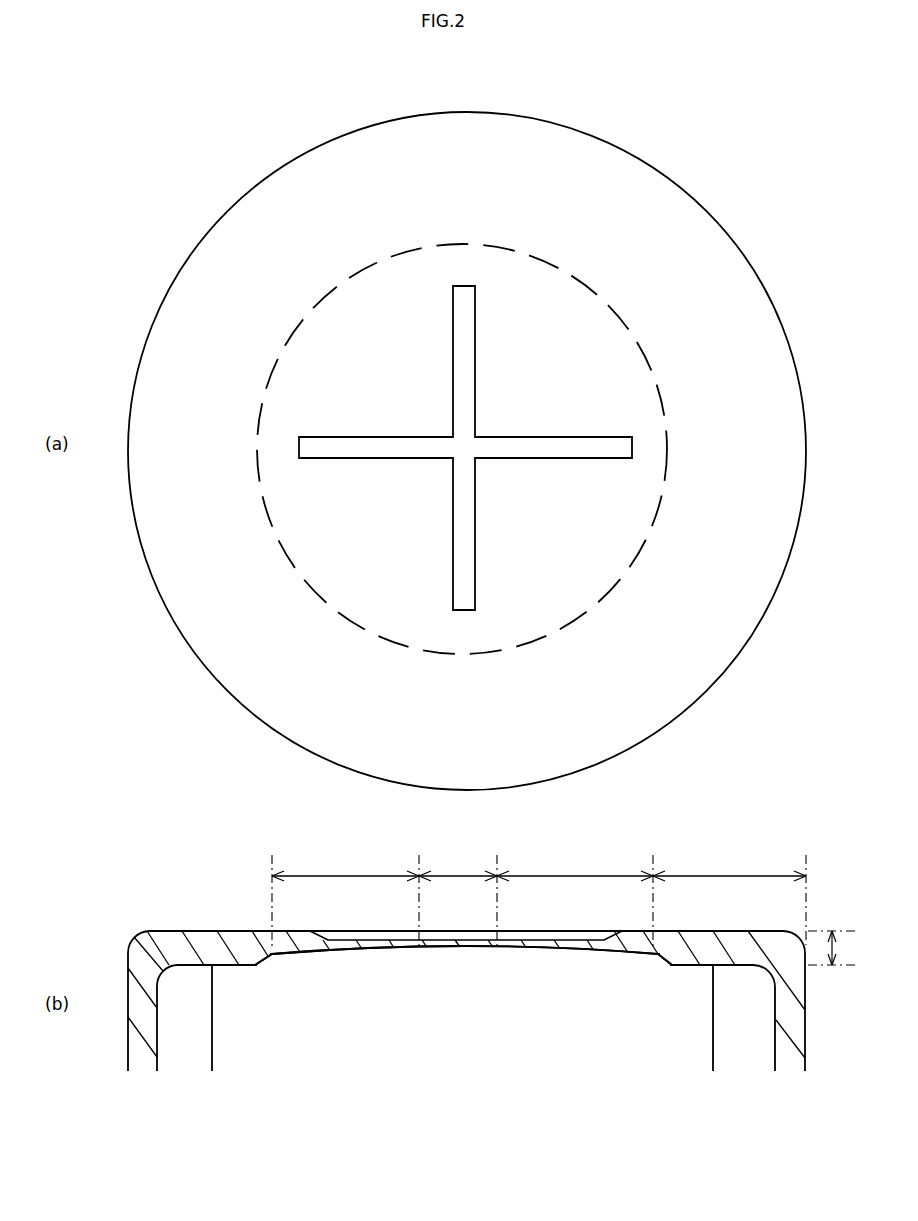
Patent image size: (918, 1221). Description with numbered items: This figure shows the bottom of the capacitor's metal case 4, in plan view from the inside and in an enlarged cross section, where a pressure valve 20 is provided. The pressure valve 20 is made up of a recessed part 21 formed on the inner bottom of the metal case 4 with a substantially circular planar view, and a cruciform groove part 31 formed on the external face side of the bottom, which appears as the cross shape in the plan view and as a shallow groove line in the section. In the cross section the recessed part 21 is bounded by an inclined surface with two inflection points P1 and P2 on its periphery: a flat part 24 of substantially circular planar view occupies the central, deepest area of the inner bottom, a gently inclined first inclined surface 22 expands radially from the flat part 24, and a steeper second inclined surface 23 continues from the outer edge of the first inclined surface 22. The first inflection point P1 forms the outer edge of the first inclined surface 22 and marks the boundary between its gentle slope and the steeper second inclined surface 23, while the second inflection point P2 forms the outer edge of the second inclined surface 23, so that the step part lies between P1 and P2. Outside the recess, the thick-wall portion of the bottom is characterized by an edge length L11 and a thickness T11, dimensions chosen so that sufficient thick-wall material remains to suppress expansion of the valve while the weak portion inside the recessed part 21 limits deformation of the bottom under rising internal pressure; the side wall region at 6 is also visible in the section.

The metal case 4 is at (668, 198).
The casing side wall 6 is at (225, 1023).
The pressure valve 20 is at (312, 850).
The recessed part 21 is at (393, 645).
The first inclined surface 22 is at (347, 876).
The second inclined surface 23 is at (258, 967).
The flat part 24 is at (459, 876).
The cruciform groove part 31 is at (547, 433).
The first inflection point P1 is at (268, 950).
The second inflection point P2 is at (255, 970).
The length of edge portion of inner bottom L11 is at (730, 876).
The thickness of thick-wall portion T11 is at (836, 953).